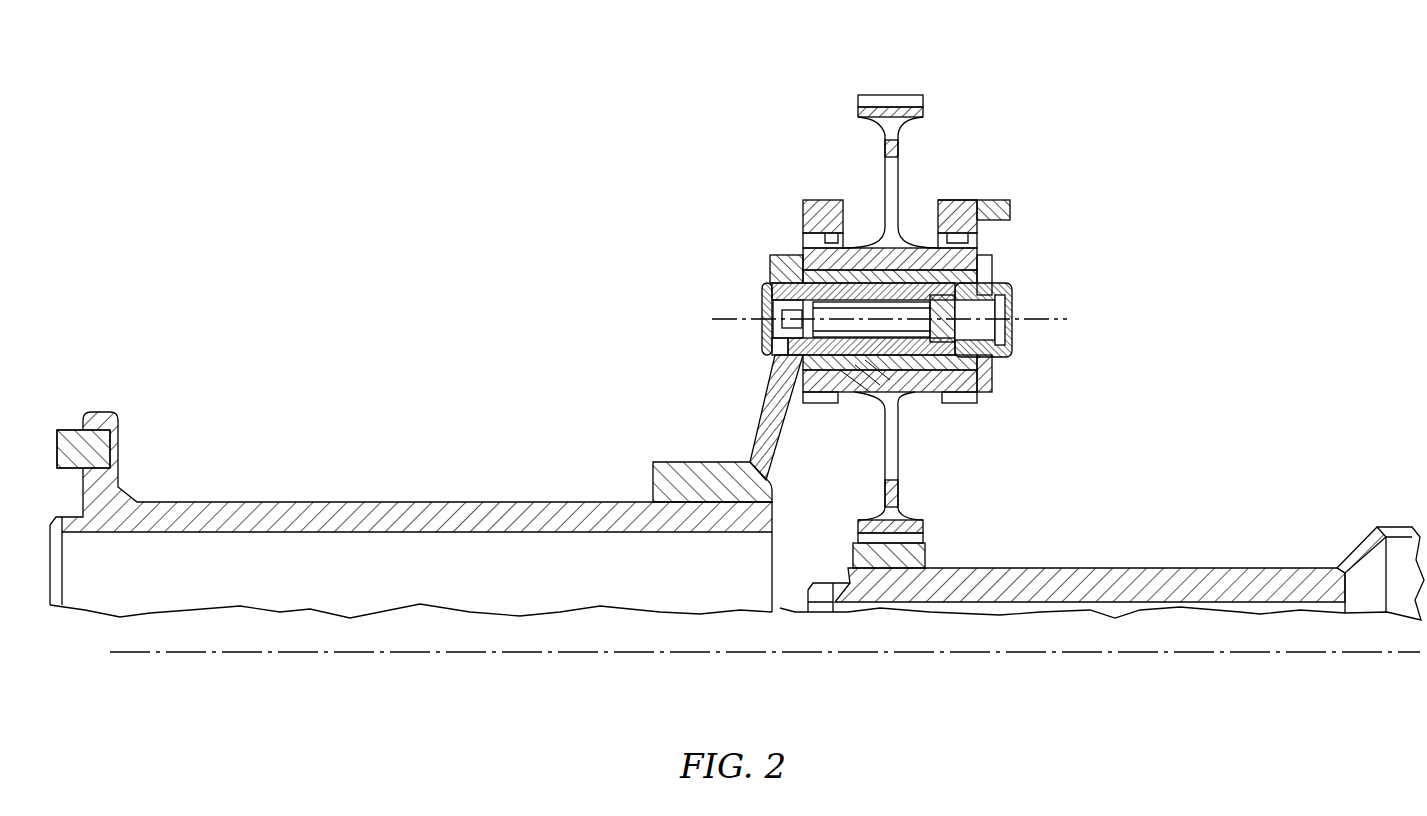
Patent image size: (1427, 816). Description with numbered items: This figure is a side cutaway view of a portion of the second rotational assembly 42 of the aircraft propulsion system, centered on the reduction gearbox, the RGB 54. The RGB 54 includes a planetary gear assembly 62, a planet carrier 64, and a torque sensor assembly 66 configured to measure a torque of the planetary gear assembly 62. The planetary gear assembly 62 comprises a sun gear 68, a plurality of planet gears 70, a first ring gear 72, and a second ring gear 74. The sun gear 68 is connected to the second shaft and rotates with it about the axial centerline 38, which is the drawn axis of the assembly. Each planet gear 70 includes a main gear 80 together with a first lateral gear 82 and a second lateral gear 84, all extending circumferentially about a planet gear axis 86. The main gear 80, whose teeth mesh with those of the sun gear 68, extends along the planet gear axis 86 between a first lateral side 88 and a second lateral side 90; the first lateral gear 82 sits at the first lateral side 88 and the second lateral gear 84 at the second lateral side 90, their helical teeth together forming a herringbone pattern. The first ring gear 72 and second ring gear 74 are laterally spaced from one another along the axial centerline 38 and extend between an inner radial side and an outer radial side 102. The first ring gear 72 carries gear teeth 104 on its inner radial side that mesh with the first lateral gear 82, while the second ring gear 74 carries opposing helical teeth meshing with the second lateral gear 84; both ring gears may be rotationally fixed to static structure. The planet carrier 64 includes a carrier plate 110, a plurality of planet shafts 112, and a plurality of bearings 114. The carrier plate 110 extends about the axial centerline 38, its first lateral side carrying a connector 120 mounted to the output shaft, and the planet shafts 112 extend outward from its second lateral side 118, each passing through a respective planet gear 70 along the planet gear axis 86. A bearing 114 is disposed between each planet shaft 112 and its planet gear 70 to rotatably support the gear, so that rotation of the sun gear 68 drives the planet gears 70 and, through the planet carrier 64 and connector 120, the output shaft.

The axial centerline 38 is at (1392, 655).
The second rotational assembly 42 is at (1203, 116).
The RGB 54 is at (916, 336).
The planetary gear assembly 62 is at (1010, 180).
The planet carrier 64 is at (745, 394).
The torque sensor assembly 66 is at (1012, 207).
The sun gear 68 is at (928, 556).
The planet gears 70 is at (972, 418).
The first ring gear 72 is at (815, 200).
The second ring gear 74 is at (965, 200).
The main gear 80 is at (895, 161).
The first lateral gear 82 is at (807, 243).
The second lateral gear 84 is at (980, 238).
The planet gear axis 86 is at (1060, 328).
The first lateral side 88 is at (766, 189).
The second lateral side 90 is at (1035, 212).
The outer radial side 102 is at (840, 245).
The gear teeth 104 is at (948, 200).
The carrier plate 110 is at (772, 263).
The planet shafts 112 is at (866, 328).
The bearings 114 is at (994, 278).
The second lateral side 118 is at (797, 417).
The connector 120 is at (680, 462).